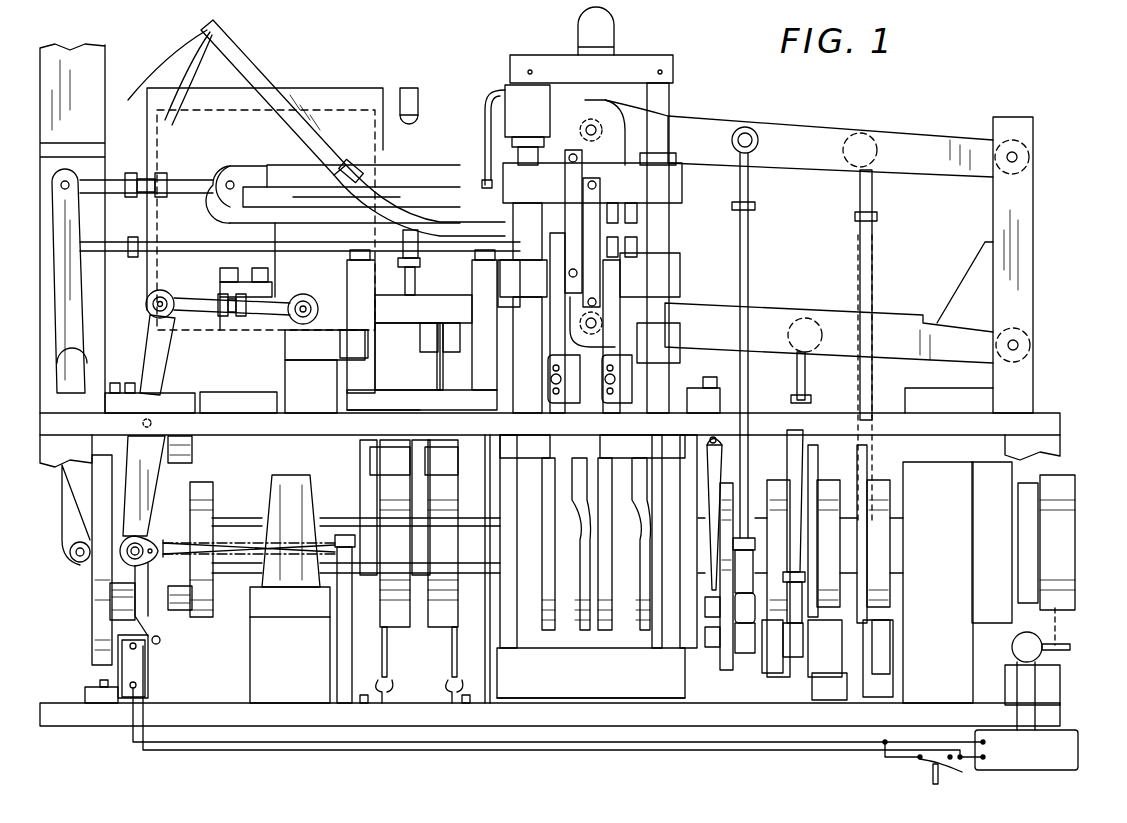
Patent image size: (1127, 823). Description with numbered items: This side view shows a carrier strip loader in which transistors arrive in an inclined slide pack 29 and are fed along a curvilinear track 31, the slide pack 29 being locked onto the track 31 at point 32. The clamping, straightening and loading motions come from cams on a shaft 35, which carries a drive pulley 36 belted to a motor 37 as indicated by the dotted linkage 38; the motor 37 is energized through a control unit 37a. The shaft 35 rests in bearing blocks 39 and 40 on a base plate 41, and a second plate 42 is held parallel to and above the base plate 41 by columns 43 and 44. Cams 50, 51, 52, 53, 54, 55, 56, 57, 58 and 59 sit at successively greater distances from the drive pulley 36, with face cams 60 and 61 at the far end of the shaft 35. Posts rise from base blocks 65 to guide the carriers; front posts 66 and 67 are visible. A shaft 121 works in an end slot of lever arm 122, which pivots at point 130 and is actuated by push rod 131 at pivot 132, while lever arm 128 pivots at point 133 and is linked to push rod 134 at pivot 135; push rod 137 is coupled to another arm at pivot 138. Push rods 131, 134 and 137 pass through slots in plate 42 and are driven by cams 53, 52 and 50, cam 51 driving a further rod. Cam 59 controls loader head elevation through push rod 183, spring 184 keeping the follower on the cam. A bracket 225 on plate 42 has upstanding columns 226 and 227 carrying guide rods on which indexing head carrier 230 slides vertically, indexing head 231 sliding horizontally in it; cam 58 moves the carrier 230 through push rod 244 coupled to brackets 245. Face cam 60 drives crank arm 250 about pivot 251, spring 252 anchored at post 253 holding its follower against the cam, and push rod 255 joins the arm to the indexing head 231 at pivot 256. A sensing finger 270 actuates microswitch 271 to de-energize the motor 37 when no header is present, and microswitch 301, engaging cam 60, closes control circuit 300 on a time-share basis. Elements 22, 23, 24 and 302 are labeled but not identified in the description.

The fan line 22 is at (195, 75).
The fan line 23 is at (195, 55).
The fan line 24 is at (160, 70).
The slide pack 29 is at (262, 62).
The curvilinear track 31 is at (365, 196).
The point 32 is at (345, 160).
The shaft 35 is at (335, 522).
The drive pulley 36 is at (1046, 542).
The motor 37 is at (1012, 652).
The motor control unit 37a is at (1068, 730).
The dotted linkage 38 is at (1058, 625).
The bearing block 39 is at (957, 582).
The bearing block 40 is at (291, 531).
The base plate 41 is at (210, 703).
The second plate 42 is at (284, 432).
The column 43 is at (487, 620).
The column 44 is at (683, 665).
The cam 50 is at (868, 452).
The cam 51 is at (818, 450).
The cam 52 is at (785, 452).
The cam 53 is at (752, 452).
The cam 54 is at (644, 632).
The cam 55 is at (606, 632).
The cam 56 is at (582, 632).
The cam 57 is at (547, 632).
The cam 58 is at (440, 627).
The cam 59 is at (397, 627).
The face cam 60 is at (190, 642).
The face cam 61 is at (92, 620).
The base blocks 65 is at (580, 700).
The front post 66 is at (670, 95).
The front post 67 is at (528, 146).
The shaft 121 is at (598, 140).
The lever arm 122 is at (835, 132).
The lever arm 128 is at (890, 320).
The pivot point 130 is at (1018, 157).
The push rod 131 is at (750, 234).
The pivot 132 is at (758, 143).
The pivot point 133 is at (1019, 345).
The push rod 134 is at (806, 360).
The pivot 135 is at (803, 328).
The push rod 137 is at (874, 234).
The pivot 138 is at (866, 152).
The push rod 183 is at (418, 284).
The spring 184 is at (388, 690).
The bracket 225 is at (405, 405).
The column 226 is at (490, 385).
The column 227 is at (400, 333).
The indexing head carrier 230 is at (447, 320).
The indexing head 231 is at (320, 292).
The push rod 244 is at (437, 380).
The brackets 245 is at (450, 343).
The crank arm 250 is at (170, 373).
The pivot 251 is at (153, 423).
The spring 252 is at (232, 540).
The post 253 is at (340, 622).
The push rod 255 is at (232, 318).
The pivot 256 is at (302, 318).
The sensing finger 270 is at (932, 778).
The microswitch 271 is at (950, 766).
The control circuit 300 is at (650, 744).
The microswitch 301 is at (118, 676).
The switch actuator 302 is at (158, 646).